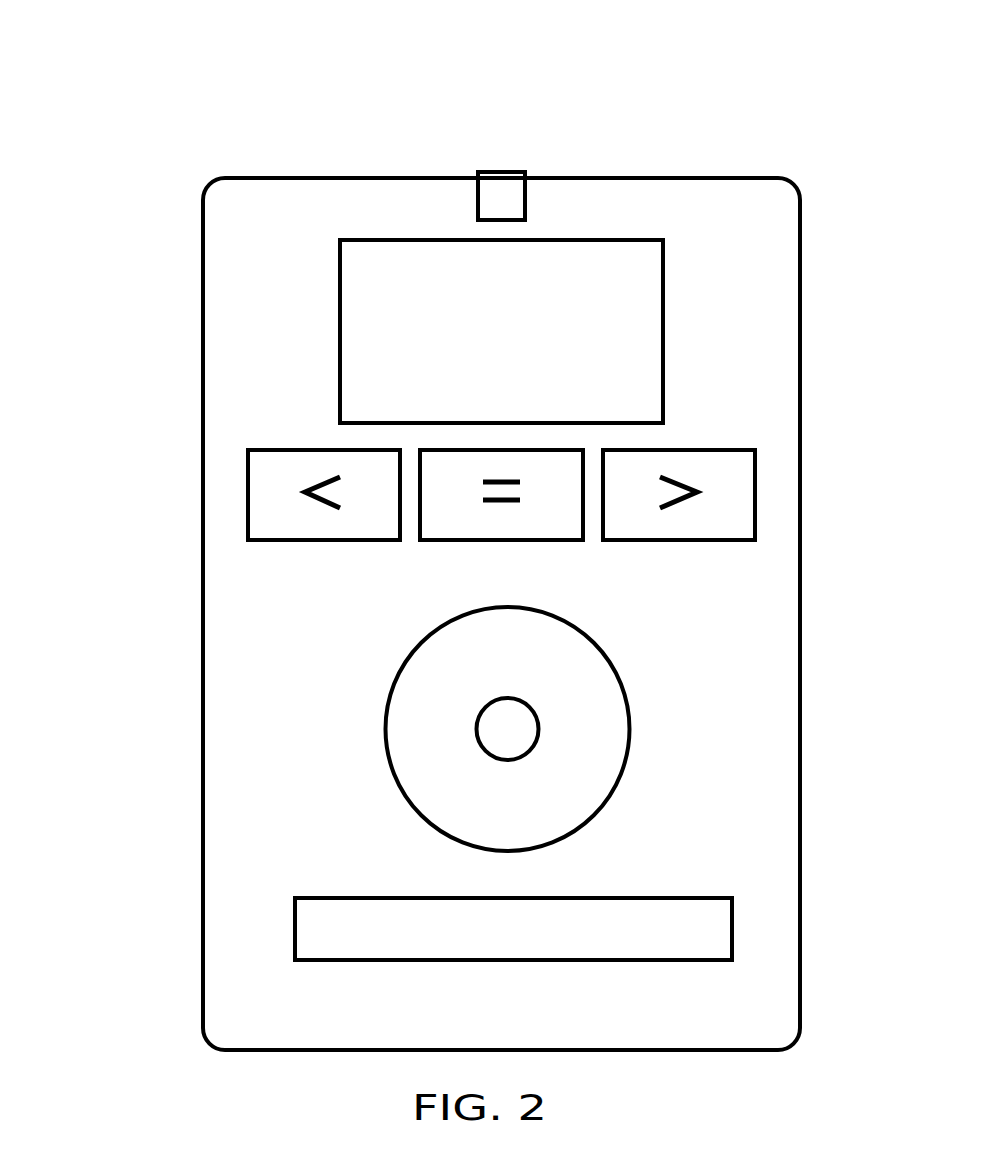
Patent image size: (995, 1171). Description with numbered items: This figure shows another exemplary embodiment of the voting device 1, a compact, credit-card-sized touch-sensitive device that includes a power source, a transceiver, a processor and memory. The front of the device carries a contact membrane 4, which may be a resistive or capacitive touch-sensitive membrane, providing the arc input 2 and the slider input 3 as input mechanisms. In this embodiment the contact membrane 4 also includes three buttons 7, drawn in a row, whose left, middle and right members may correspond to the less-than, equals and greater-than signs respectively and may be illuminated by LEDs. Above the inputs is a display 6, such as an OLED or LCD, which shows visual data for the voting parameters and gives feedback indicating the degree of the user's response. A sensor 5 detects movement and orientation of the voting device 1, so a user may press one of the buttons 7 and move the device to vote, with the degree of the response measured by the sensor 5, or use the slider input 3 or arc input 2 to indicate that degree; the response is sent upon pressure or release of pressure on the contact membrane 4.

The voting device 1 is at (822, 128).
The arc input 2 is at (570, 698).
The slider input 3 is at (662, 928).
The contact membrane 4 is at (250, 655).
The sensor 5 is at (502, 197).
The display 6 is at (387, 307).
The buttons 7 is at (638, 470).